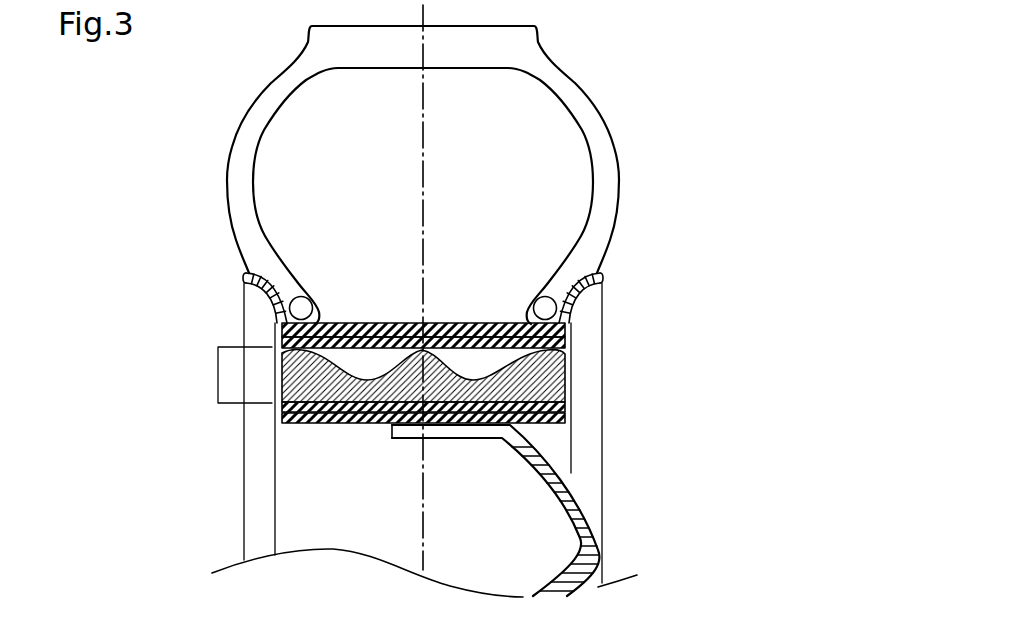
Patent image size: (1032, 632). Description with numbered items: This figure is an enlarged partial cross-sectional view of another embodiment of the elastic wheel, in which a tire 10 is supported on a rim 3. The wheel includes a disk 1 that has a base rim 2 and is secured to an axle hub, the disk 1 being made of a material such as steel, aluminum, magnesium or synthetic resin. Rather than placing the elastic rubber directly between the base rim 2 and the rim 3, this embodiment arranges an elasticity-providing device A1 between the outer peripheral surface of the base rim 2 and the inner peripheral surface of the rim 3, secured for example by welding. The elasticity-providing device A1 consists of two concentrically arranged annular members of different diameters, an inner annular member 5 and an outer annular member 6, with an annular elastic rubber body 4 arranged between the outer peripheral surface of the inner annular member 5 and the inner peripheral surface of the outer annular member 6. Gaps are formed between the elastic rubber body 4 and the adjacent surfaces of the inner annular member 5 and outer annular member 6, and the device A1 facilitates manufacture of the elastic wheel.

The tire 10 is at (580, 85).
The rim 3 is at (603, 272).
The outer annular member 6 is at (567, 342).
The annular elastic rubber body 4 is at (568, 368).
The inner annular member 5 is at (568, 403).
The base rim 2 is at (567, 420).
The disk 1 is at (580, 512).
The elasticity-providing device A1 is at (218, 377).